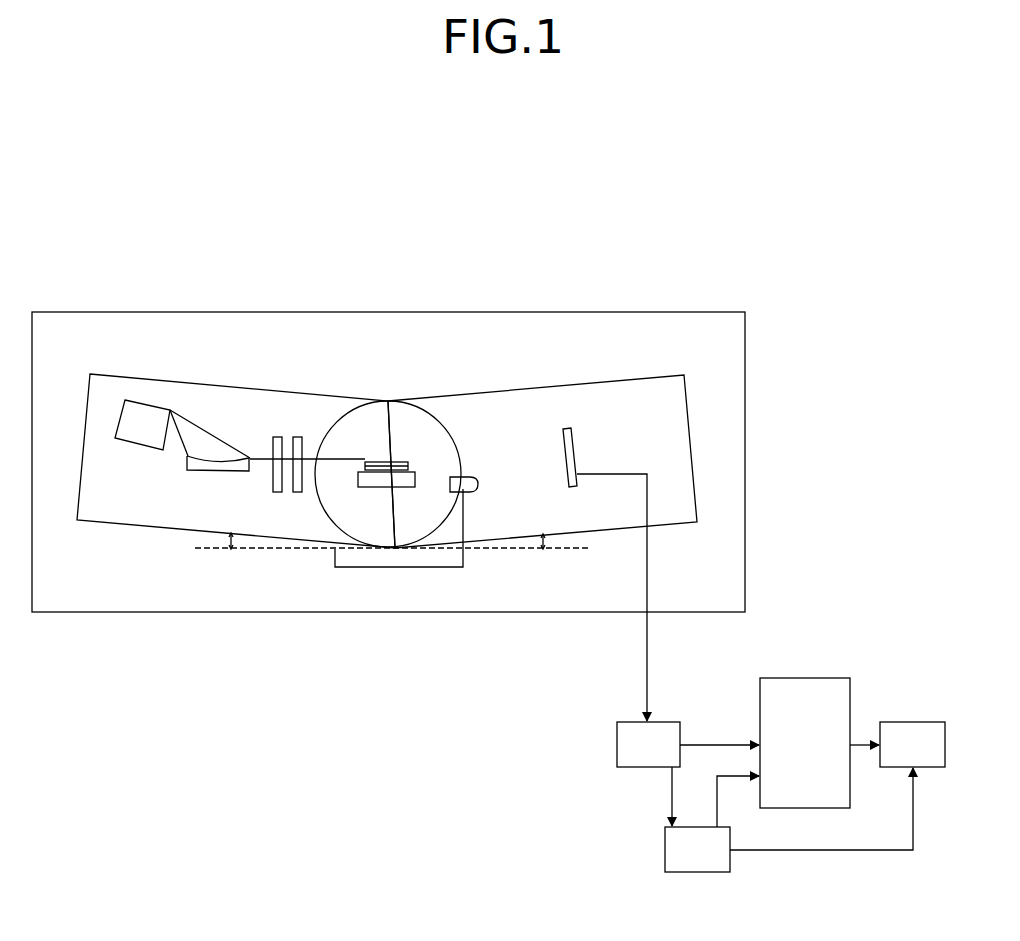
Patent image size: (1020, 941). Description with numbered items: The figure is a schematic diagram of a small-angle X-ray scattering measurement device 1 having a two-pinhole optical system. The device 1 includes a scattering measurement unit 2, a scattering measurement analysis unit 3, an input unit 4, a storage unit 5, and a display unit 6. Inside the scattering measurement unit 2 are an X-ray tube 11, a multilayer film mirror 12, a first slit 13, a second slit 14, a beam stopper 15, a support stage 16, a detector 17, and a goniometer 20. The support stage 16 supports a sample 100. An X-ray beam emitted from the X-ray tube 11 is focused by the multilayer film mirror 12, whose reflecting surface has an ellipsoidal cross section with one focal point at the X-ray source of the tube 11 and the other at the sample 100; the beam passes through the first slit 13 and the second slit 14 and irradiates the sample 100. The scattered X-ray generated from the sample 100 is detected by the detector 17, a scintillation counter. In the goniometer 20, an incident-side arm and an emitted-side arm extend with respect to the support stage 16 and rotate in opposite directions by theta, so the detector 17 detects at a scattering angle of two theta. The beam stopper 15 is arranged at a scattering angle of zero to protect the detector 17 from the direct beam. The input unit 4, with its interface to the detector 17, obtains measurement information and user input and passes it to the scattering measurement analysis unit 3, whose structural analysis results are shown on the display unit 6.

The small-angle X-ray scattering measurement device 1 is at (727, 193).
The scattering measurement unit 2 is at (586, 312).
The scattering measurement analysis unit 3 is at (805, 743).
The input unit 4 is at (648, 744).
The storage unit 5 is at (697, 849).
The display unit 6 is at (912, 744).
The X-ray tube 11 is at (140, 428).
The multilayer film mirror 12 is at (241, 472).
The first slit 13 is at (278, 437).
The second slit 14 is at (297, 437).
The beam stopper 15 is at (472, 492).
The support stage 16 is at (396, 488).
The detector 17 is at (565, 430).
The goniometer 20 is at (365, 410).
The sample 100 is at (404, 462).